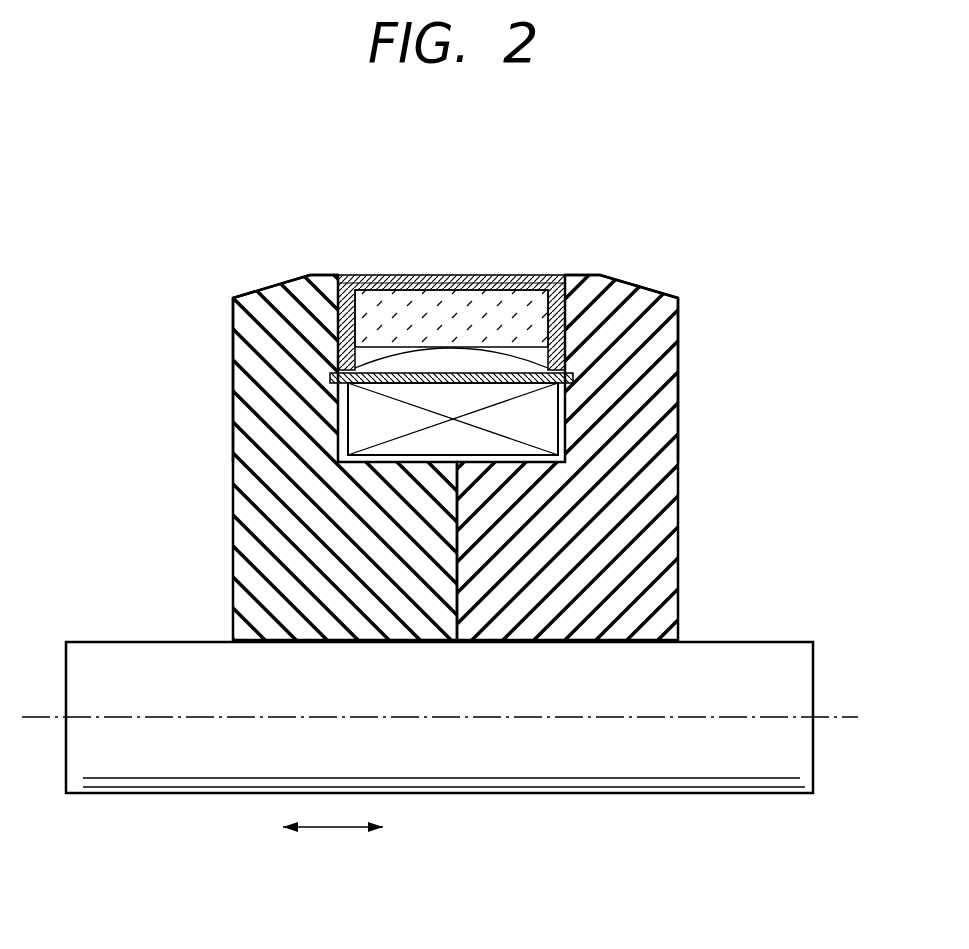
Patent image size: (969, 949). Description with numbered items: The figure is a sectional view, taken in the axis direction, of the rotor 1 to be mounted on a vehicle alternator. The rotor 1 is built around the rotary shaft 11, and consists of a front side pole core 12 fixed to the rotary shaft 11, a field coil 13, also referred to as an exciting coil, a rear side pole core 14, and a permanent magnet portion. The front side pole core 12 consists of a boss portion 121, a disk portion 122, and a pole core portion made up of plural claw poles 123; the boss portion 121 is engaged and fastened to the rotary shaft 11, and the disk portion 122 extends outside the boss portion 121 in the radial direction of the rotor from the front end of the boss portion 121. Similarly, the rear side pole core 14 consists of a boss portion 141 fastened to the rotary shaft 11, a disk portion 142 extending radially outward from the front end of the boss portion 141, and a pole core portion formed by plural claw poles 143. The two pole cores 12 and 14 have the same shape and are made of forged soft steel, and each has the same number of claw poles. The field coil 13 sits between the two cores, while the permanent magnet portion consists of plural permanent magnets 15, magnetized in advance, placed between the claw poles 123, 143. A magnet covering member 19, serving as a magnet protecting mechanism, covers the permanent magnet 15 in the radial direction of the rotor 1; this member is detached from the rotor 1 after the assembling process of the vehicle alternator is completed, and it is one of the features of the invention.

The rotor 1 is at (447, 527).
The rotary shaft 11 is at (697, 770).
The front side pole core 12 is at (378, 529).
The boss portion 121 is at (357, 523).
The disk portion 122 is at (260, 393).
The claw poles 123 is at (317, 298).
The field coil 13 is at (528, 420).
The rear side pole core 14 is at (639, 511).
The boss portion 141 is at (593, 493).
The disk portion 142 is at (617, 380).
The claw poles 143 is at (622, 289).
The permanent magnet 15 is at (390, 302).
The magnet covering member 19 is at (517, 275).